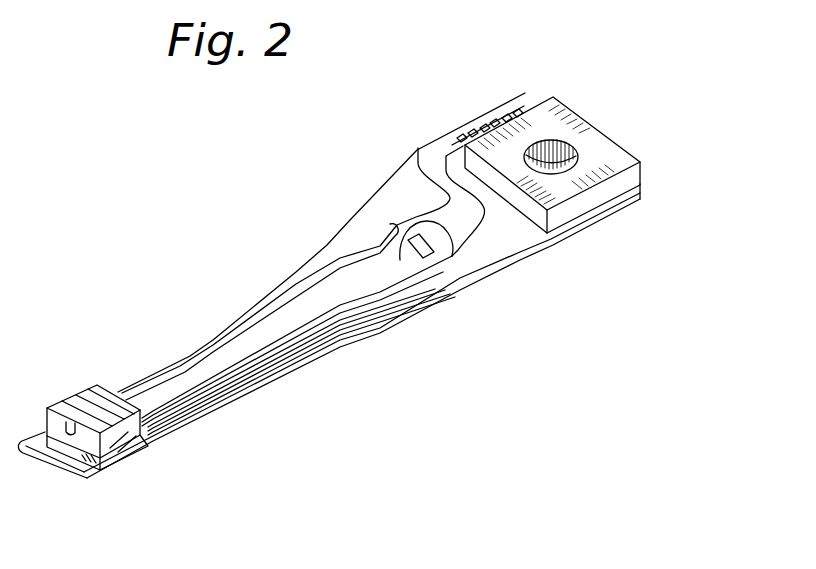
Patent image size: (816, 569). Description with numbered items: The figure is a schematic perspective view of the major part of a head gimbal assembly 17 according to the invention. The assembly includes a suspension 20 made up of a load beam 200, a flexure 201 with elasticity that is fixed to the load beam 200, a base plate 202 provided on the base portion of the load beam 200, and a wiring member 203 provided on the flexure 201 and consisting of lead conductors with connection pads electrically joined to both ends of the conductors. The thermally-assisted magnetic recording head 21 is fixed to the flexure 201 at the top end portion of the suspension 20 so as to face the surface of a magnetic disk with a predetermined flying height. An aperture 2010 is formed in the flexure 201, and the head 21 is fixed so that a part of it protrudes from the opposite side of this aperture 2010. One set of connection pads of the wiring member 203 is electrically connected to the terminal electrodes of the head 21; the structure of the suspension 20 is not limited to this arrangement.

The head gimbal assembly 17 is at (405, 130).
The suspension 20 is at (348, 218).
The thermally-assisted magnetic recording head 21 is at (88, 410).
The load beam 200 is at (473, 257).
The flexure 201 is at (418, 283).
The base plate 202 is at (593, 173).
The wiring member 203 is at (273, 357).
The aperture 2010 is at (132, 433).